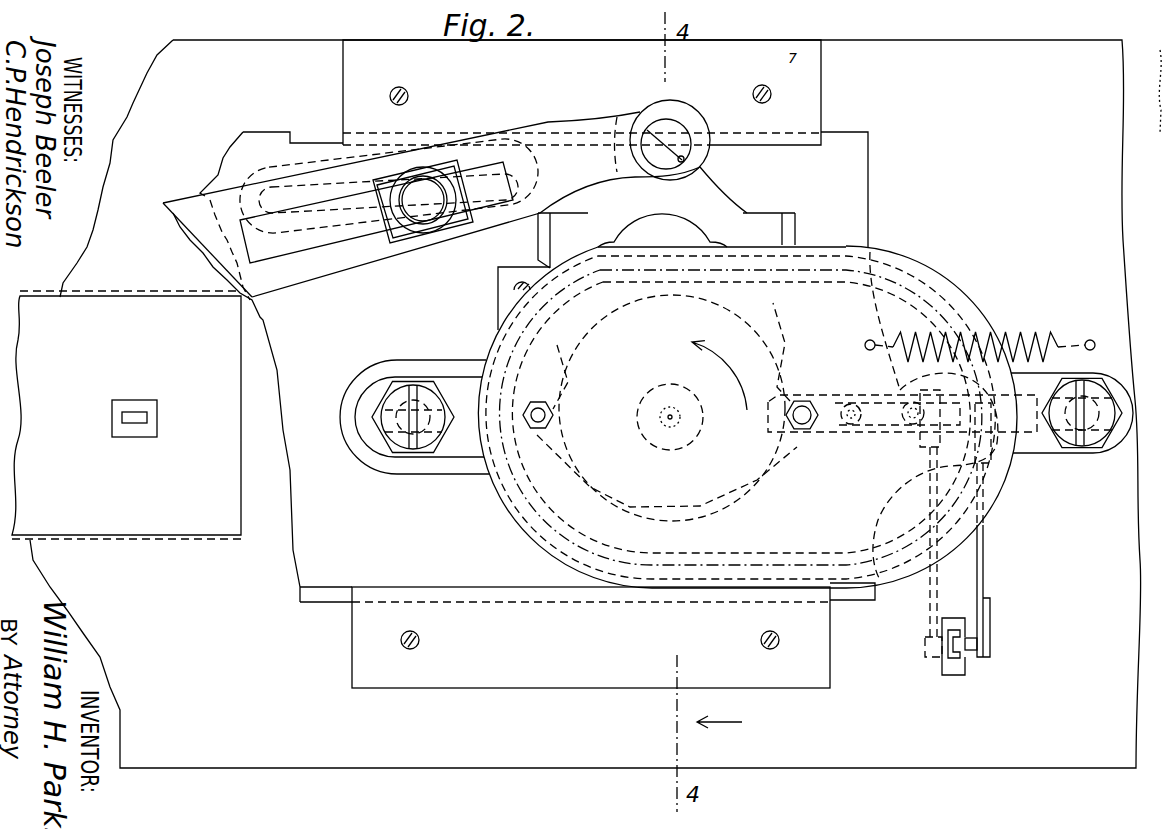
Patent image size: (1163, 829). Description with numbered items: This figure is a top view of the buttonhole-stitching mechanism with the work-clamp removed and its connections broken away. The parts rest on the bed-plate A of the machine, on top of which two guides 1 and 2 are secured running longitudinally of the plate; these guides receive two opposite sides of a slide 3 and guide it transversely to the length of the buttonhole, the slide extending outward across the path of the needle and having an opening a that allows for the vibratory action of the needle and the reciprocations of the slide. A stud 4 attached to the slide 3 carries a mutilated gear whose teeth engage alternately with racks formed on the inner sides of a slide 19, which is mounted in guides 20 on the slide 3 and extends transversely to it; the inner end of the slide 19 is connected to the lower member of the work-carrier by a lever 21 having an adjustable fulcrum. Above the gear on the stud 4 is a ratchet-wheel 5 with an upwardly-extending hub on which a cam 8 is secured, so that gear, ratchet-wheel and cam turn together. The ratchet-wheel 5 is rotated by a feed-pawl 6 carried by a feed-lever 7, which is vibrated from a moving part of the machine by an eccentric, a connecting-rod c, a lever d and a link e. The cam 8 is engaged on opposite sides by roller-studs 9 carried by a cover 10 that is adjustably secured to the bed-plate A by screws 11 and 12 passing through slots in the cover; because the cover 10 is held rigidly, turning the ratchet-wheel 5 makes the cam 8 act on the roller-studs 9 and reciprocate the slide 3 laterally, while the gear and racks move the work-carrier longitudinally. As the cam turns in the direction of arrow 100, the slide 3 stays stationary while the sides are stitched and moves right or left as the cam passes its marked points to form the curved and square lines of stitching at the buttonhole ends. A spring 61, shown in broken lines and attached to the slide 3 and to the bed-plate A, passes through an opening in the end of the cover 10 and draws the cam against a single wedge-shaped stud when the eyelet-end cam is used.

The guide 1 is at (591, 637).
The guide 2 is at (492, 168).
The slide 3 is at (524, 367).
The stud 4 is at (666, 425).
The ratchet-wheel 5 is at (770, 305).
The feed-pawl 6 is at (840, 391).
The feed-lever 7 is at (900, 390).
The cam 8 is at (614, 486).
The roller-stud 9 is at (540, 406).
The cover 10 is at (946, 278).
The screw 11 is at (402, 438).
The screw 12 is at (1087, 430).
The slide 19 is at (765, 220).
The guide 20 is at (523, 273).
The lever 21 is at (392, 201).
The spring 61 is at (1012, 362).
The arrow 100 is at (721, 375).
The opening a is at (133, 421).
The connecting-rod c is at (940, 585).
The lever d is at (960, 643).
The link e is at (983, 585).
The bed-plate A is at (576, 404).